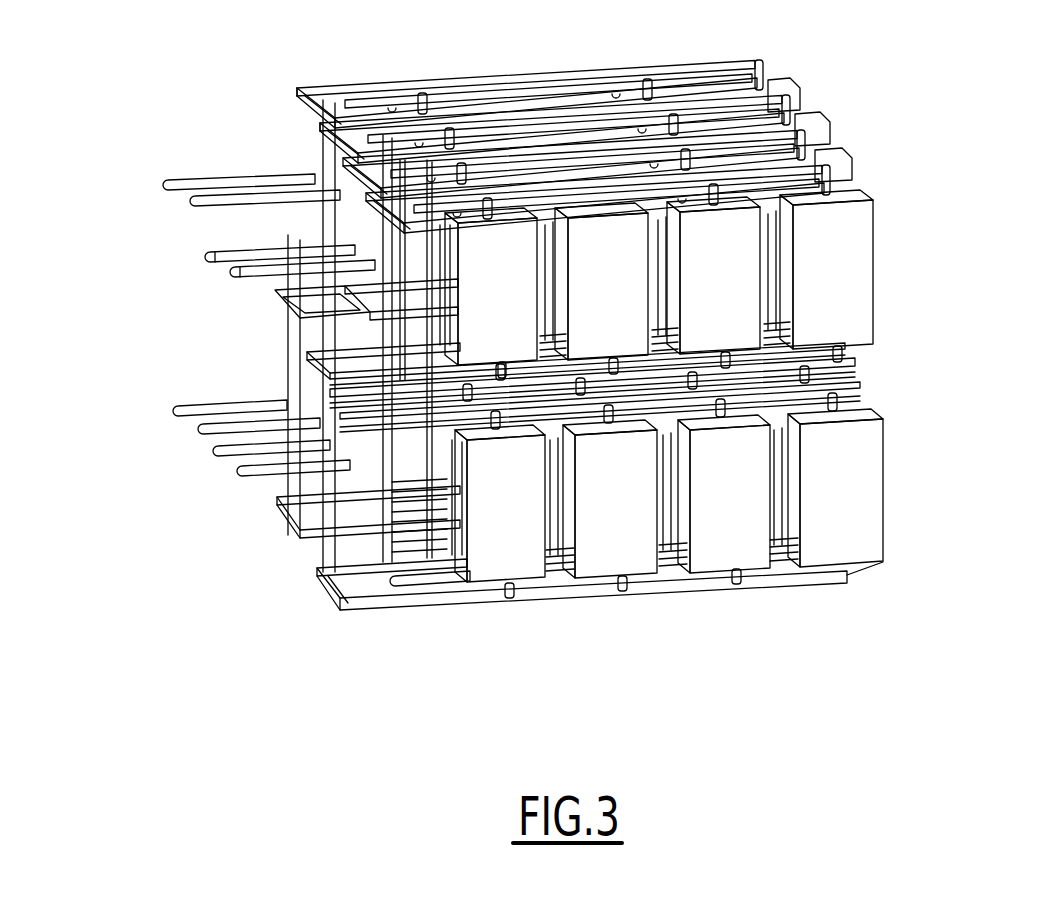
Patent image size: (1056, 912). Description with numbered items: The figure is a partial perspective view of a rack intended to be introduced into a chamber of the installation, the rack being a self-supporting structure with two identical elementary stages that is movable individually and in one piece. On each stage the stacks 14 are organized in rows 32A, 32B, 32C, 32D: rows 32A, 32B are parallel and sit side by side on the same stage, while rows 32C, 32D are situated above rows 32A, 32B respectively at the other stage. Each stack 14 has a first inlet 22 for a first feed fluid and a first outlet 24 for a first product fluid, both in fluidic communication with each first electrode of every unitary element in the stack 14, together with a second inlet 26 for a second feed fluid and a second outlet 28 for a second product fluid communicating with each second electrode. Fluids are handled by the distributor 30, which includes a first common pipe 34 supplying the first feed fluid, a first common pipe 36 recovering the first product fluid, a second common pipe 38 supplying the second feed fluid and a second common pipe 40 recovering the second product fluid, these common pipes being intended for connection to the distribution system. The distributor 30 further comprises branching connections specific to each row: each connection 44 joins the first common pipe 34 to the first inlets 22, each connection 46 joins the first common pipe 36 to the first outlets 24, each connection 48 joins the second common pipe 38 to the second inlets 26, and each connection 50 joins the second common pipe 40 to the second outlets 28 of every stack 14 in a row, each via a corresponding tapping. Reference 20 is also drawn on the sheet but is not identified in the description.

The stack 14 is at (664, 386).
The coolant supply tube 20 is at (460, 238).
The first inlet 22 is at (460, 363).
The first outlet 24 is at (450, 215).
The second inlet 26 is at (497, 215).
The second outlet 28 is at (512, 360).
The distributor 30 is at (706, 602).
The row 32A is at (315, 600).
The row 32B is at (283, 533).
The row 32C is at (933, 357).
The row 32D is at (890, 171).
The first common pipe for supplying a first feed fluid 34 is at (216, 448).
The first common pipe for recovering a first product fluid 36 is at (220, 258).
The second common pipe for supplying a second feed fluid 38 is at (236, 272).
The second common pipe for recovering a second product fluid 40 is at (256, 472).
The connection 44 is at (402, 350).
The connection 46 is at (738, 180).
The connection 48 is at (787, 108).
The connection 50 is at (772, 328).